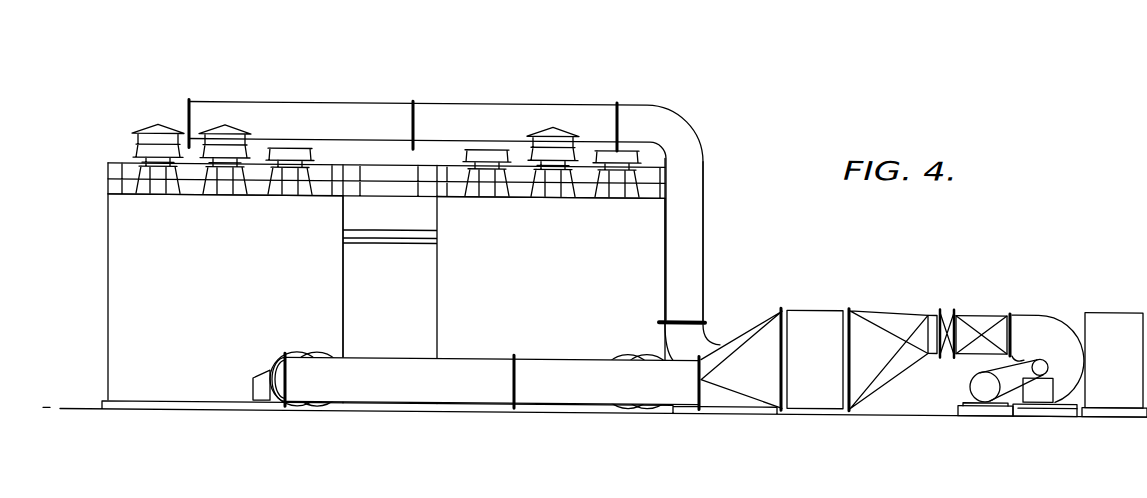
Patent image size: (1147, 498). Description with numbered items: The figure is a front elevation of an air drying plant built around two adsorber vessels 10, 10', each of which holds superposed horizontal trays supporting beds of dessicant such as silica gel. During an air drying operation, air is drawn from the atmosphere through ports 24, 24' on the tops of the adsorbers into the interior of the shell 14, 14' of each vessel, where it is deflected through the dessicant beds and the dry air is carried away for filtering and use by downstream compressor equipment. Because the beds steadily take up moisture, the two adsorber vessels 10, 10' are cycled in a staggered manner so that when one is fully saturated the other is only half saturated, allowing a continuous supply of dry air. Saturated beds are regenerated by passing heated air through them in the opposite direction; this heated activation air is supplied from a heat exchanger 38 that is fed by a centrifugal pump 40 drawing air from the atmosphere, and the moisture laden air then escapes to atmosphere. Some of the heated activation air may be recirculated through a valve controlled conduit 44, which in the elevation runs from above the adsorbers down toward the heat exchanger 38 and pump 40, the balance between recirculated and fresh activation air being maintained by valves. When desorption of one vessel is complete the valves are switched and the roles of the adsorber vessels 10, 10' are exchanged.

The adsorber vessel 10 is at (225, 298).
The adsorber vessel 10' is at (551, 279).
The shell 14 is at (83, 280).
The shell 14' is at (390, 300).
The port 24 is at (164, 126).
The port 24' is at (575, 127).
The heat exchanger 38 is at (810, 318).
The centrifugal pump 40 is at (1033, 342).
The valve controlled conduit 44 is at (690, 202).